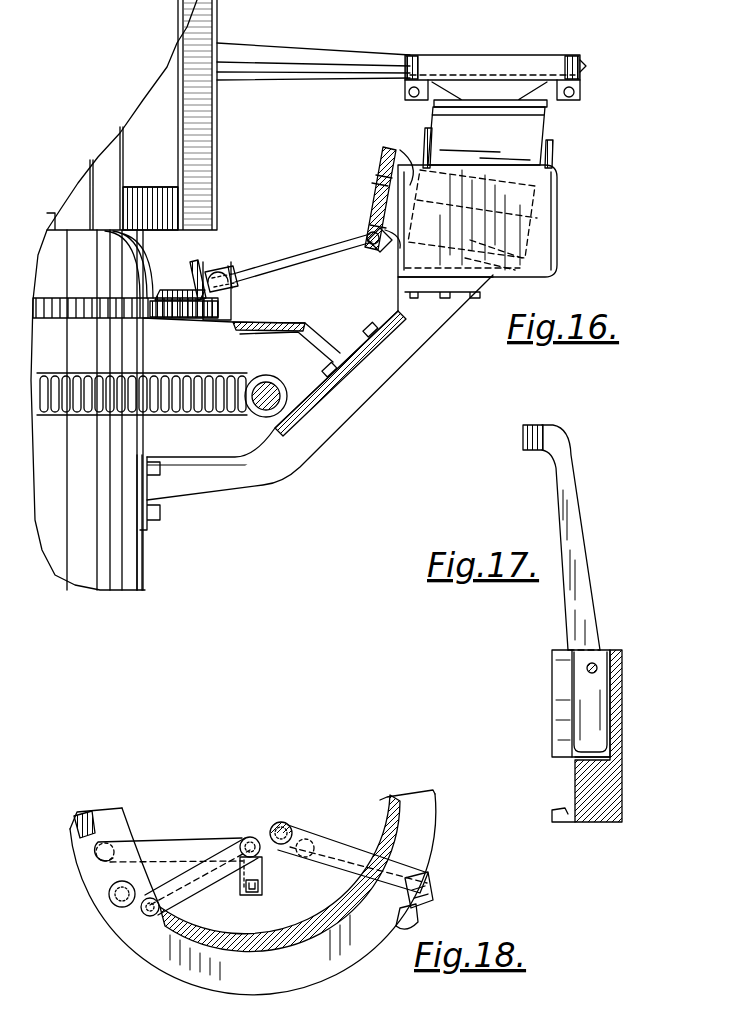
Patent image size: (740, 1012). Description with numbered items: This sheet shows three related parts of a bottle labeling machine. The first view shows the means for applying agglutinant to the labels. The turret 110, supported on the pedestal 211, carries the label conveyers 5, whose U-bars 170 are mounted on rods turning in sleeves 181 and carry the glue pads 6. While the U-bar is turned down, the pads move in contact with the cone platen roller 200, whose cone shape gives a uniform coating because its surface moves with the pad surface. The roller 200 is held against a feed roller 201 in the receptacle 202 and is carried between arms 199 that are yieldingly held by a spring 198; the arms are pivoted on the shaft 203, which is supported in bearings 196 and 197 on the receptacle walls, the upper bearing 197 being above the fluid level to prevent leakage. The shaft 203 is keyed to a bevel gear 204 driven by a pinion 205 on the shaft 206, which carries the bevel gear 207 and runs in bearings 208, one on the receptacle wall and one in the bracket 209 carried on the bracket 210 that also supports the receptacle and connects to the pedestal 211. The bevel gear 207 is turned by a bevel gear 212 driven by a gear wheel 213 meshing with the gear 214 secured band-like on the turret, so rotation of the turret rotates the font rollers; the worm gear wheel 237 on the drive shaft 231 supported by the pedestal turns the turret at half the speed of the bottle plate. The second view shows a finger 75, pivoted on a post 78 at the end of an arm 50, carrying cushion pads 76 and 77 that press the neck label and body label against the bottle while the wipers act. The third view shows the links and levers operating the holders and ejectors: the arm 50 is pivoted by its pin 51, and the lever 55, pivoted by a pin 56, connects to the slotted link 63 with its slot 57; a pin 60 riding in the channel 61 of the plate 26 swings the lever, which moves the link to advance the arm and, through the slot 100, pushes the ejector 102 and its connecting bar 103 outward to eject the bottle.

In FIG. 16, the label conveyer 5 is at (594, 64).
In FIG. 16, the glue pad 6 is at (518, 100).
In FIG. 18, the plate 26 is at (278, 984).
In FIG. 17, the label holding arm 50 is at (563, 824).
In FIG. 18, the label holding arm 50 is at (353, 859).
In FIG. 18, the pin 51 is at (278, 822).
In FIG. 18, the lever 55 is at (201, 876).
In FIG. 18, the pin 56 is at (109, 895).
In FIG. 18, the slot 57 is at (307, 860).
In FIG. 18, the pin 60 is at (148, 915).
In FIG. 18, the channel 61 is at (380, 815).
In FIG. 18, the slotted link 63 is at (188, 836).
In FIG. 17, the finger 75 is at (578, 513).
In FIG. 18, the finger 75 is at (430, 898).
In FIG. 17, the cushion pressure pad 76 is at (522, 438).
In FIG. 18, the cushion pressure pad 76 is at (414, 921).
In FIG. 17, the cushion pressure pad 77 is at (552, 707).
In FIG. 17, the post 78 is at (622, 778).
In FIG. 18, the slot 100 is at (270, 862).
In FIG. 18, the ejector 102 is at (250, 893).
In FIG. 18, the bar 103 is at (240, 878).
In FIG. 16, the turret 110 is at (146, 295).
In FIG. 16, the U-bar 170 is at (487, 66).
In FIG. 16, the sleeve 181 is at (297, 78).
In FIG. 16, the bearing 196 is at (540, 232).
In FIG. 16, the upper bearing 197 is at (399, 150).
In FIG. 16, the spring 198 is at (555, 158).
In FIG. 16, the arm 199 is at (421, 148).
In FIG. 16, the cone platen roller 200 is at (486, 136).
In FIG. 16, the feed roller 201 is at (472, 214).
In FIG. 16, the receptacle 202 is at (558, 201).
In FIG. 16, the shaft 203 is at (505, 222).
In FIG. 16, the bevel gear 204 is at (383, 170).
In FIG. 16, the pinion 205 is at (374, 246).
In FIG. 16, the shaft 206 is at (312, 246).
In FIG. 16, the bevel gear 207 is at (196, 260).
In FIG. 16, the bearing 208 is at (223, 266).
In FIG. 16, the bracket 209 is at (273, 321).
In FIG. 16, the bracket 210 is at (380, 395).
In FIG. 16, the supporting pedestal 211 is at (142, 548).
In FIG. 16, the bevel gear 212 is at (168, 292).
In FIG. 16, the gear wheel 213 is at (163, 320).
In FIG. 16, the gear 214 is at (55, 299).
In FIG. 16, the shaft 231 is at (280, 382).
In FIG. 16, the worm gear wheel 237 is at (182, 416).